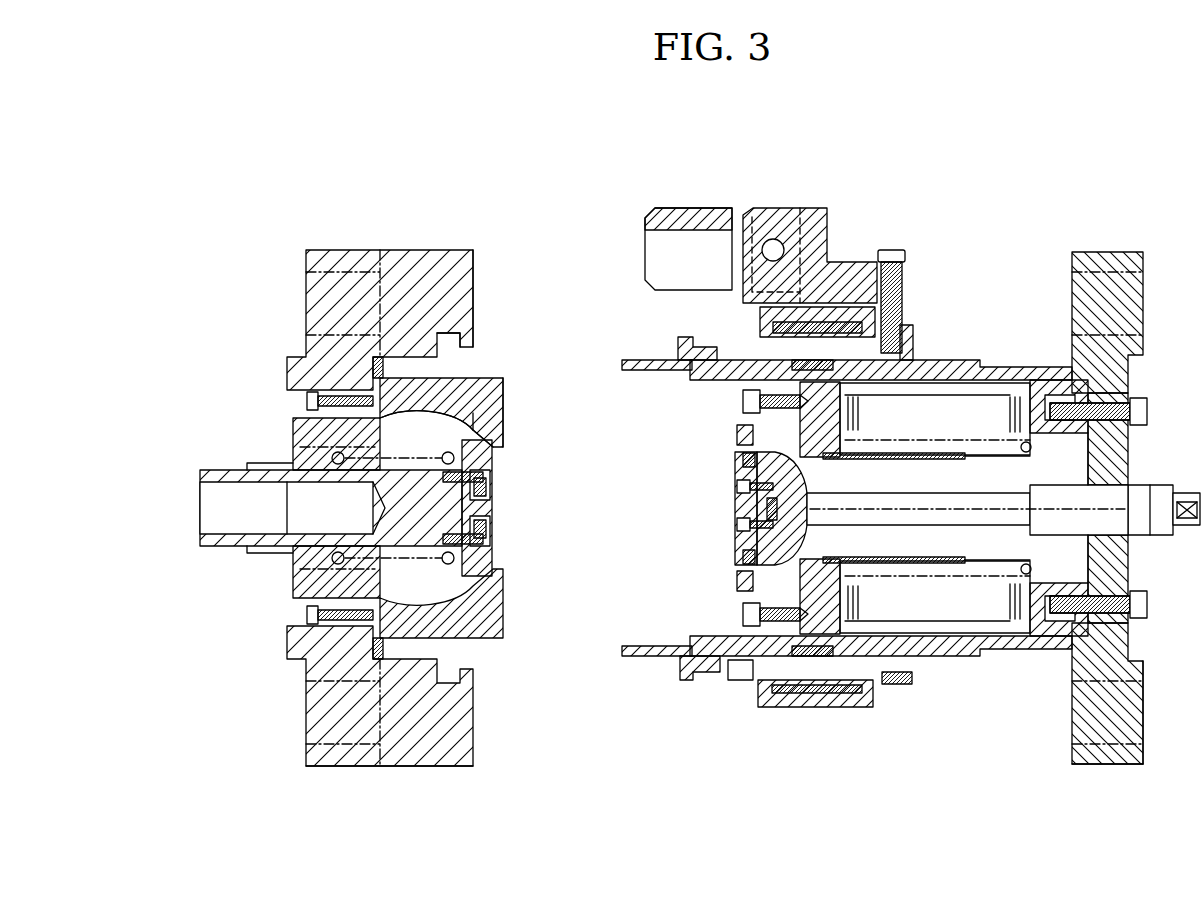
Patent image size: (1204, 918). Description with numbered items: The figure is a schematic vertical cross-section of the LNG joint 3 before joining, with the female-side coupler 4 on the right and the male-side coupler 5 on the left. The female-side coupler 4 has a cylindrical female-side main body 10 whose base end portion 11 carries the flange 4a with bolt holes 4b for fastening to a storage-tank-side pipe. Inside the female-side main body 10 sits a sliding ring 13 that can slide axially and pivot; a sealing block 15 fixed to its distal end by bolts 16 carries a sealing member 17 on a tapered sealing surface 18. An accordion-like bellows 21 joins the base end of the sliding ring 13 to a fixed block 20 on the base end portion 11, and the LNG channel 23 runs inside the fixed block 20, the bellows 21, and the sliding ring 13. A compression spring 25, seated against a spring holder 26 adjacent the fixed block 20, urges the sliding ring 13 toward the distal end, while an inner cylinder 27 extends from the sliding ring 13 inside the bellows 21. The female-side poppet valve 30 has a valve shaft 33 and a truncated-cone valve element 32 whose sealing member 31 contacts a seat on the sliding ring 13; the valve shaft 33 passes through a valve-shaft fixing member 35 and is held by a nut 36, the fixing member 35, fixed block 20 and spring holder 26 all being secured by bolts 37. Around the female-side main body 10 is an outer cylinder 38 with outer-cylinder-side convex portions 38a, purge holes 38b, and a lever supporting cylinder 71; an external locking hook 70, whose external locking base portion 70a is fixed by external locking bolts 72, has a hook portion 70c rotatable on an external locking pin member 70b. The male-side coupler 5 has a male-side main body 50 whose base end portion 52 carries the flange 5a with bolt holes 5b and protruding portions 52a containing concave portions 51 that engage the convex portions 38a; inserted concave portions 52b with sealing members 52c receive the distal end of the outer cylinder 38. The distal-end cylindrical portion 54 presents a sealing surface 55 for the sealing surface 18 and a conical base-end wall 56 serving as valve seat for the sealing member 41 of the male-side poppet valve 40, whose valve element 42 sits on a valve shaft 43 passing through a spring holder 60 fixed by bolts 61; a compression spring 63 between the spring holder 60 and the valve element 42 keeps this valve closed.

The LNG joint 3 is at (878, 465).
The female-side coupler 4 is at (1134, 741).
The flange 4a is at (1128, 766).
The bolt holes 4b is at (1130, 700).
The male-side coupler 5 is at (357, 748).
The flange 5a is at (337, 766).
The bolt holes 5b is at (306, 712).
The female-side main body 10 is at (948, 360).
The base end portion 11 is at (1113, 252).
The sliding ring 13 is at (800, 458).
The sealing block 15 is at (743, 413).
The bolts 16 is at (743, 610).
The sealing member 17 is at (737, 577).
The tapered sealing surface 18 is at (733, 427).
The fixed block 20 is at (1032, 383).
The bellows 21 is at (1010, 397).
The LNG channel 23 is at (922, 547).
The compression spring 25 is at (1023, 446).
The spring holder 26 is at (1067, 445).
The inner cylinder 27 is at (933, 459).
The female-side poppet valve 30 is at (683, 504).
The sealing member 31 is at (737, 465).
The valve element 32 is at (735, 512).
The valve shaft 33 is at (972, 526).
The valve-shaft fixing member 35 is at (1130, 470).
The nut 36 is at (1162, 536).
The bolts 37 is at (1147, 412).
The outer cylinder 38 is at (640, 358).
The outer-cylinder-side convex portions 38a is at (690, 336).
The holes 38b is at (742, 680).
The male-side poppet valve 40 is at (530, 488).
The sealing member 41 is at (462, 567).
The valve element 42 is at (492, 510).
The valve shaft 43 is at (382, 540).
The male-side main body 50 is at (487, 376).
The male-side-main-body concave portions 51 is at (463, 337).
The base end portion 52 is at (425, 250).
The protruding portions 52a is at (473, 273).
The inserted concave portions 52b is at (423, 365).
The sealing members 52c is at (385, 647).
The distal-end cylindrical portion 54 is at (505, 400).
The sealing surface 55 is at (497, 432).
The base-end wall 56 is at (457, 415).
The spring holder 60 is at (293, 452).
The bolts 61 is at (307, 400).
The compression spring 63 is at (343, 455).
The external locking hook 70 is at (781, 209).
The external locking base portion 70a is at (752, 295).
The external locking pin member 70b is at (774, 240).
The hook portion 70c is at (655, 248).
The lever supporting cylinder 71 is at (767, 317).
The external locking bolts 72 is at (903, 262).